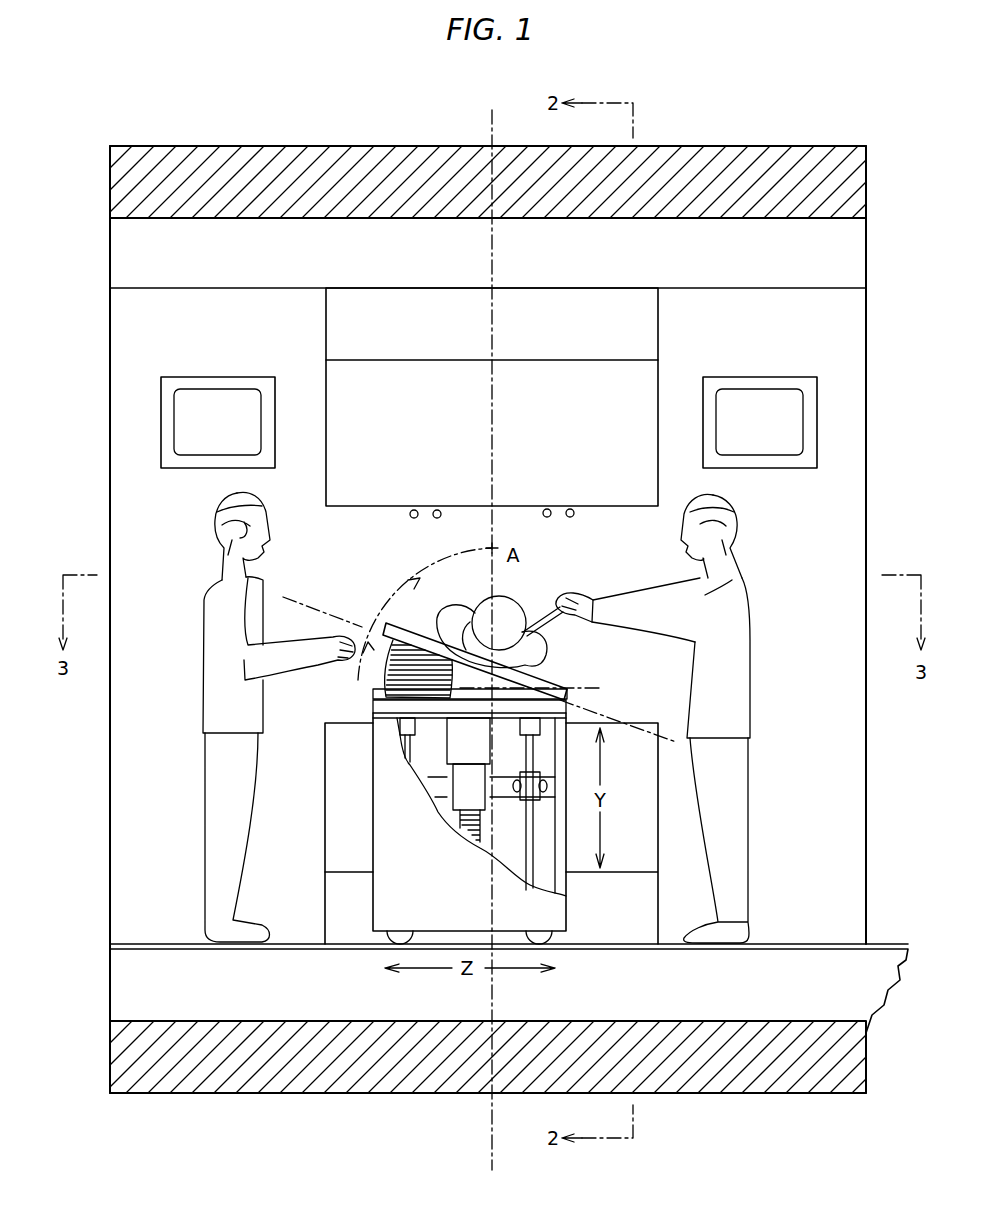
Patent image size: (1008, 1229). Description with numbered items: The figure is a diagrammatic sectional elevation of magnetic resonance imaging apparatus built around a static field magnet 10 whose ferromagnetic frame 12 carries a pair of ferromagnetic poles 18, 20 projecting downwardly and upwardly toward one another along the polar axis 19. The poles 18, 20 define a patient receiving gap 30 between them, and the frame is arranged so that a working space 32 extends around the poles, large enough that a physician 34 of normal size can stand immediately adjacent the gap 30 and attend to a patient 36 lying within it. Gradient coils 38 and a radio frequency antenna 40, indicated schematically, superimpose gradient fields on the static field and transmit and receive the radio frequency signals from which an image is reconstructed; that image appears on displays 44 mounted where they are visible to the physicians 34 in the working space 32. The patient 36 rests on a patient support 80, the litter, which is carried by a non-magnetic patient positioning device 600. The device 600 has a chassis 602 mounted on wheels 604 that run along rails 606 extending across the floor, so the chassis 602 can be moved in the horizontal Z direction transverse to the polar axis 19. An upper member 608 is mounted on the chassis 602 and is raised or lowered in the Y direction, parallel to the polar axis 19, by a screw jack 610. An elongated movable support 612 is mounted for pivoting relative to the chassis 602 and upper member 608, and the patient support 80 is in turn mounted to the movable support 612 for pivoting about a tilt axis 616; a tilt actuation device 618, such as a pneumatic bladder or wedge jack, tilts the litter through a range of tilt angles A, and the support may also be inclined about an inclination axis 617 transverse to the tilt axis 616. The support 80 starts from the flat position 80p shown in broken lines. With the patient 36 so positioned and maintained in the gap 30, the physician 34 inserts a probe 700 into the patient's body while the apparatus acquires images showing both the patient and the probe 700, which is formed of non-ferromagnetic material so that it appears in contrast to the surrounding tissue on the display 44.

The static field magnet 10 is at (691, 126).
The ferromagnetic frame 12 is at (96, 393).
The ferromagnetic pole 18 is at (311, 394).
The polar axis 19 is at (497, 262).
The ferromagnetic pole 20 is at (311, 862).
The patient receiving gap 30 is at (604, 555).
The working space 32 is at (193, 870).
The physician 34 is at (187, 587).
The patient 36 is at (517, 580).
The gradient coils 38 is at (572, 508).
The radio frequency antenna 40 is at (547, 508).
The display 44 is at (232, 377).
The patient support 80 is at (547, 683).
The flat position of patient support 80p is at (368, 697).
The patient positioning device 600 is at (355, 805).
The chassis 602 is at (373, 826).
The wheels 604 is at (560, 940).
The rails 606 is at (818, 945).
The upper member 608 is at (567, 720).
The screw jack 610 is at (458, 806).
The movable support 612 is at (568, 706).
The tilt axis 616 is at (567, 692).
The inclination axis 617 is at (318, 607).
The tilt actuation device 618 is at (386, 674).
The probe 700 is at (538, 618).